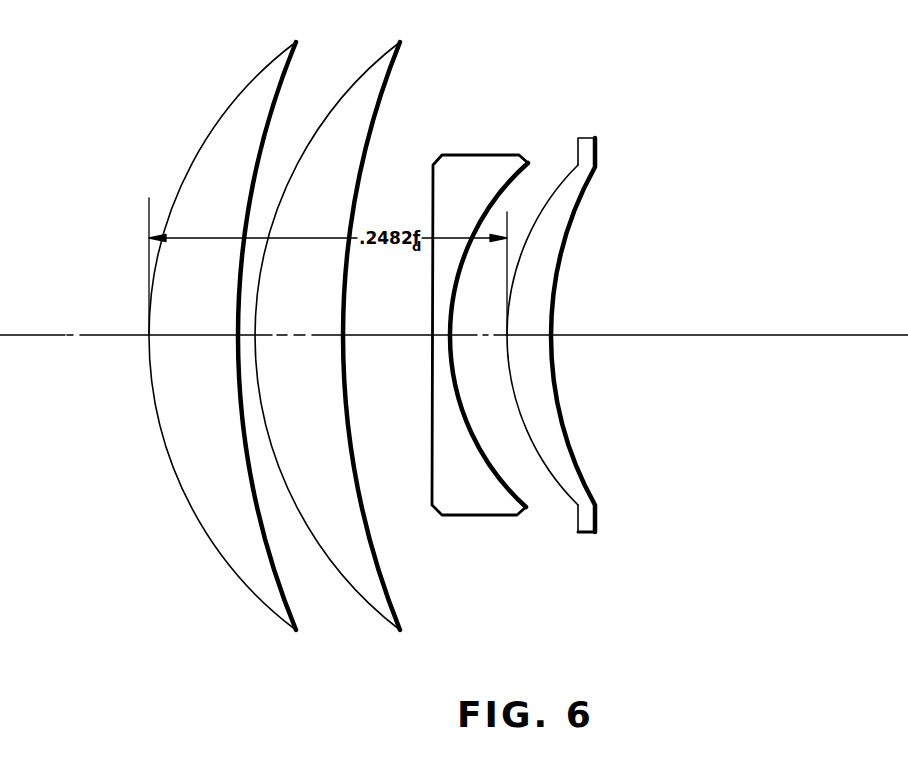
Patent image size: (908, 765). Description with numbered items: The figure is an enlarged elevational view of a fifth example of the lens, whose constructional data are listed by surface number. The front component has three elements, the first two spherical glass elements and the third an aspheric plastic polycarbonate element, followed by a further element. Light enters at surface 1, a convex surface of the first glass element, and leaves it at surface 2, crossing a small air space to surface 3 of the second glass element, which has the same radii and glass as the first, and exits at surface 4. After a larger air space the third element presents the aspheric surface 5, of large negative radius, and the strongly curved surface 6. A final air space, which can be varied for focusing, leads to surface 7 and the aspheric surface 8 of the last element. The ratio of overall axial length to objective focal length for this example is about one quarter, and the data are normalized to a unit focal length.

The surface 1 is at (190, 167).
The surface 2 is at (262, 162).
The surface 3 is at (324, 121).
The surface 4 is at (367, 167).
The surface 5 is at (433, 200).
The surface 6 is at (516, 176).
The surface 7 is at (572, 178).
The surface 8 is at (582, 196).